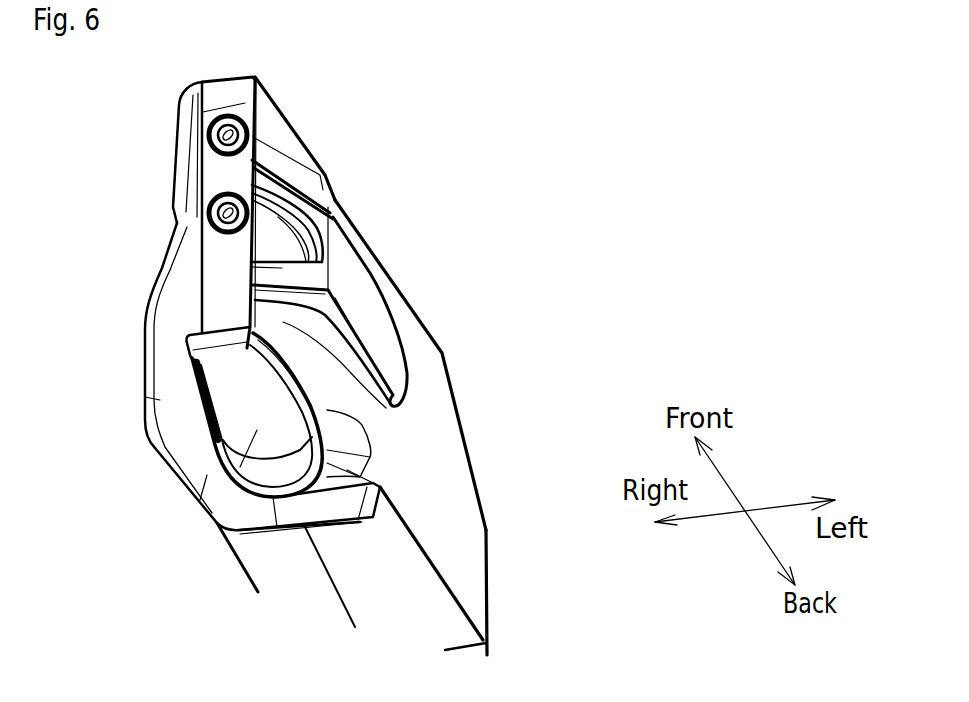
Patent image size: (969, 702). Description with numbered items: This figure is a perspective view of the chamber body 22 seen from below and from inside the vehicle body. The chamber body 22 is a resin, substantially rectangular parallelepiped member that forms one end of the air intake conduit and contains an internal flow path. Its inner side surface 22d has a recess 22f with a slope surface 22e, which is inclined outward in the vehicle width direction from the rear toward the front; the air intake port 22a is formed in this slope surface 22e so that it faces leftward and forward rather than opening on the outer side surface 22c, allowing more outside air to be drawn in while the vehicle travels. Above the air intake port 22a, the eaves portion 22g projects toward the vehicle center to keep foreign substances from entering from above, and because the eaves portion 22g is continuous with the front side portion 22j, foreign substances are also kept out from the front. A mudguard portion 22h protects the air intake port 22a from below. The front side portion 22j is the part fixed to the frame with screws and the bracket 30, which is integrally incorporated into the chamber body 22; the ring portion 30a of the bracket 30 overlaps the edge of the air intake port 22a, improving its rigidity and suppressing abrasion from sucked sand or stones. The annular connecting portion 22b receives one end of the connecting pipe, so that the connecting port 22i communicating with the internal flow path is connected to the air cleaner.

The chamber body 22 is at (445, 343).
The air intake port 22a is at (290, 243).
The connecting portion 22b is at (310, 388).
The outer side surface 22c is at (178, 162).
The inner side surface 22d is at (452, 462).
The slope surface 22e is at (307, 185).
The recess 22f is at (308, 132).
The eaves portion 22g is at (283, 120).
The mudguard portion 22h is at (445, 570).
The connecting port 22i is at (218, 525).
The front side portion 22j is at (220, 177).
The bracket 30 is at (368, 293).
The ring portion 30a is at (278, 268).